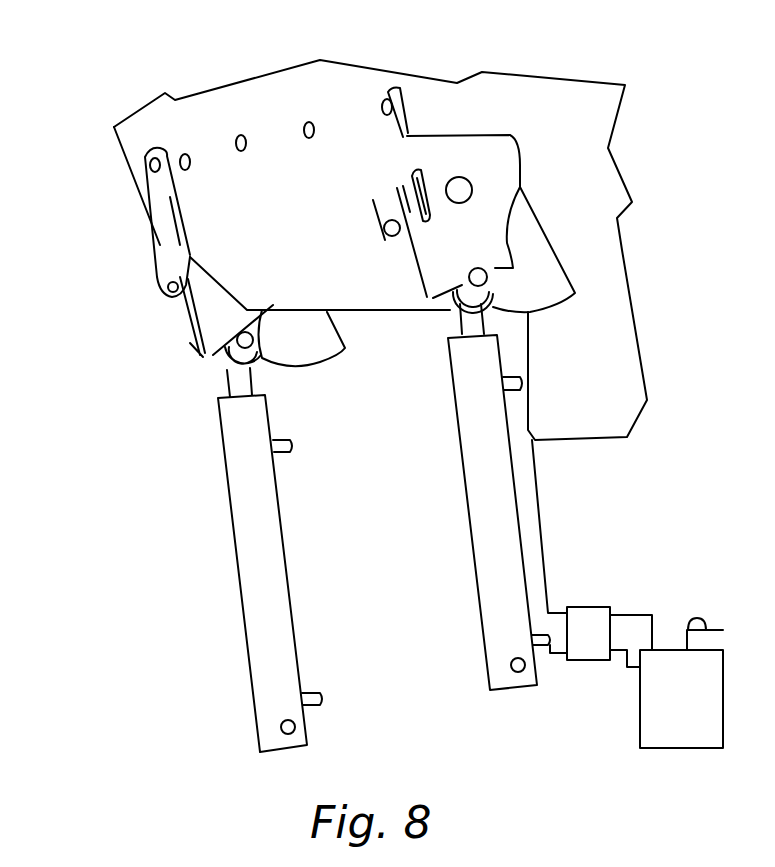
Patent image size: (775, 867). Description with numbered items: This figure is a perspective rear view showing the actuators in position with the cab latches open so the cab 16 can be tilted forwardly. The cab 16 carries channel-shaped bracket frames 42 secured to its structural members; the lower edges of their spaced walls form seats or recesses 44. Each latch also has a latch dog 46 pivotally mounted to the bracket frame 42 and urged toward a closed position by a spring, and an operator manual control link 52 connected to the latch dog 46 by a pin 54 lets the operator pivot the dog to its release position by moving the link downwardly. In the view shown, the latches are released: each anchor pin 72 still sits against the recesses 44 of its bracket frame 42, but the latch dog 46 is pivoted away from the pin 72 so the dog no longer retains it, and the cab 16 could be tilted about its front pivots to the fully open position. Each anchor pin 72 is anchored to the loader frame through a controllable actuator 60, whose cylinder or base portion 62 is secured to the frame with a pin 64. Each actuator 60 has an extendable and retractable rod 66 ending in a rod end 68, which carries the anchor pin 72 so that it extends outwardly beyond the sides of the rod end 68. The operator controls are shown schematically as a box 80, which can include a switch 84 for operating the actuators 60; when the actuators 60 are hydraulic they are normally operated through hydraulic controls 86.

The cab 16 is at (572, 96).
The pin 54 is at (140, 327).
The operator manual control link 52 is at (147, 197).
The bracket frame 42 is at (193, 343).
The recesses 44 is at (252, 334).
The anchor pin 72 is at (213, 366).
The latch dog 46 is at (303, 340).
The rod end 68 is at (215, 374).
The controllable actuator 60 is at (367, 543).
The cylinder or base portion 62 is at (296, 573).
The extendable and retractable rod 66 is at (502, 607).
The pin 64 is at (296, 727).
The hydraulic controls 86 is at (588, 615).
The operator controls 80 is at (681, 699).
The switch 84 is at (707, 647).